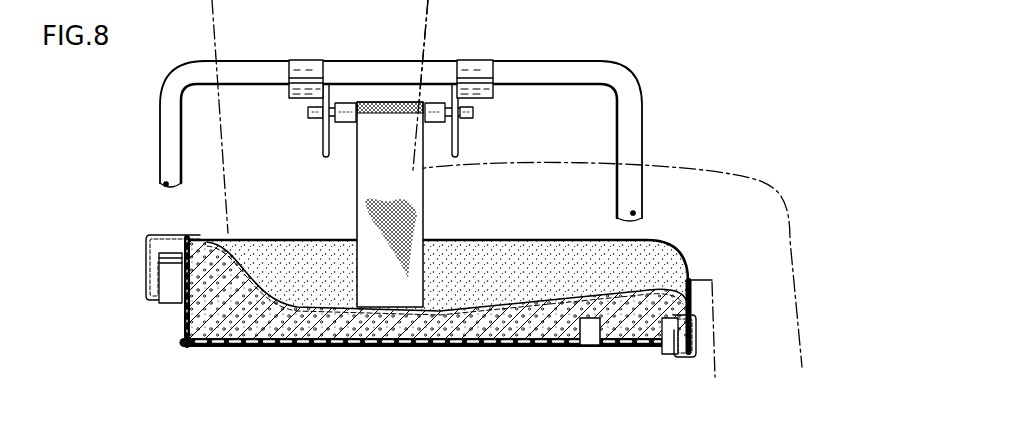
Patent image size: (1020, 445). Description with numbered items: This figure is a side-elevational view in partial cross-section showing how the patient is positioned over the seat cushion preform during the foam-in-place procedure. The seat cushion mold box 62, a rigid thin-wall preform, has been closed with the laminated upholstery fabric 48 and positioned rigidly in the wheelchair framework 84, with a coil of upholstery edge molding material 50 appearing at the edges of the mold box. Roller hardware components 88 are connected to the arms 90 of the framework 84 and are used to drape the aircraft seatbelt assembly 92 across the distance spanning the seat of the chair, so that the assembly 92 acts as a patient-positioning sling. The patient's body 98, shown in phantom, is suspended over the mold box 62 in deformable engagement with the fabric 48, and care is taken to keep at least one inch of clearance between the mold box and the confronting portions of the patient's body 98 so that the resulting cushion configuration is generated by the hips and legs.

The laminated upholstery fabric 48 is at (150, 235).
The upholstery edge molding material 50 is at (170, 291).
The seat cushion mold box 62 is at (203, 347).
The wheelchair framework 84 is at (648, 86).
The roller hardware components 88 is at (503, 102).
The arms 90 is at (515, 70).
The aircraft seatbelt assembly 92 is at (348, 212).
The patient's body 98 is at (516, 205).